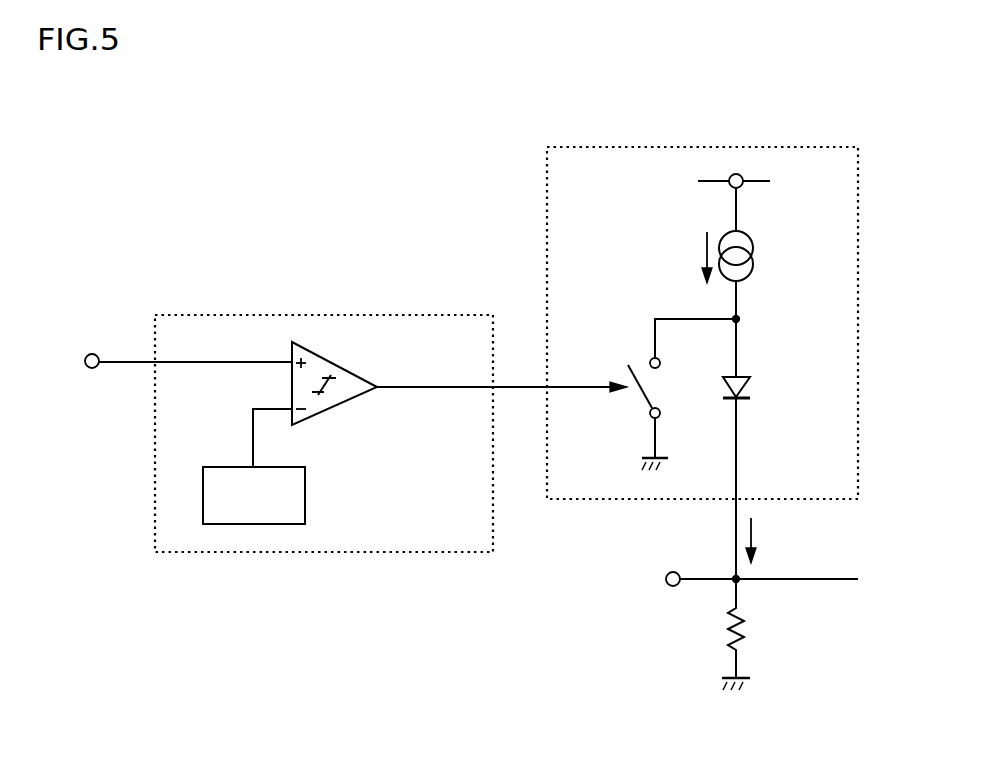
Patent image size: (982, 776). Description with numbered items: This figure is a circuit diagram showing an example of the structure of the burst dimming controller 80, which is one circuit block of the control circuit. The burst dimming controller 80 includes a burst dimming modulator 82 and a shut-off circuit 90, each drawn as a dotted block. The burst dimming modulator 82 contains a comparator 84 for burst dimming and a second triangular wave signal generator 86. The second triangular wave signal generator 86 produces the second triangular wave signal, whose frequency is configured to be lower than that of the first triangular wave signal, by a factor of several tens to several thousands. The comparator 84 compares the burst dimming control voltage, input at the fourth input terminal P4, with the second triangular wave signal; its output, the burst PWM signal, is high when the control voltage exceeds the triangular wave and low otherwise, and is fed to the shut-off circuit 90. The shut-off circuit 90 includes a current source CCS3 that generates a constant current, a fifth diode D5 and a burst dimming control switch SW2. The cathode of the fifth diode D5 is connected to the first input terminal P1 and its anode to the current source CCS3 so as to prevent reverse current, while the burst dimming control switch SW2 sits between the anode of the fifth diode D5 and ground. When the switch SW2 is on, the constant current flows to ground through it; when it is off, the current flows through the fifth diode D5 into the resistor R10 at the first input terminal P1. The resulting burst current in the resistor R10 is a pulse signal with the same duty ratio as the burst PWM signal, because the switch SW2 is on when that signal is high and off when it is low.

The burst dimming controller 80 is at (488, 744).
The burst dimming modulator 82 is at (325, 315).
The comparator for burst dimming 84 is at (336, 408).
The second triangular wave signal generator 86 is at (305, 495).
The shut-off circuit 90 is at (625, 147).
The current source CCS3 is at (750, 238).
The burst dimming control switch SW2 is at (647, 377).
The fifth diode D5 is at (750, 389).
The resistor R10 is at (756, 634).
The fourth input terminal P4 is at (90, 368).
The first input terminal P1 is at (671, 586).